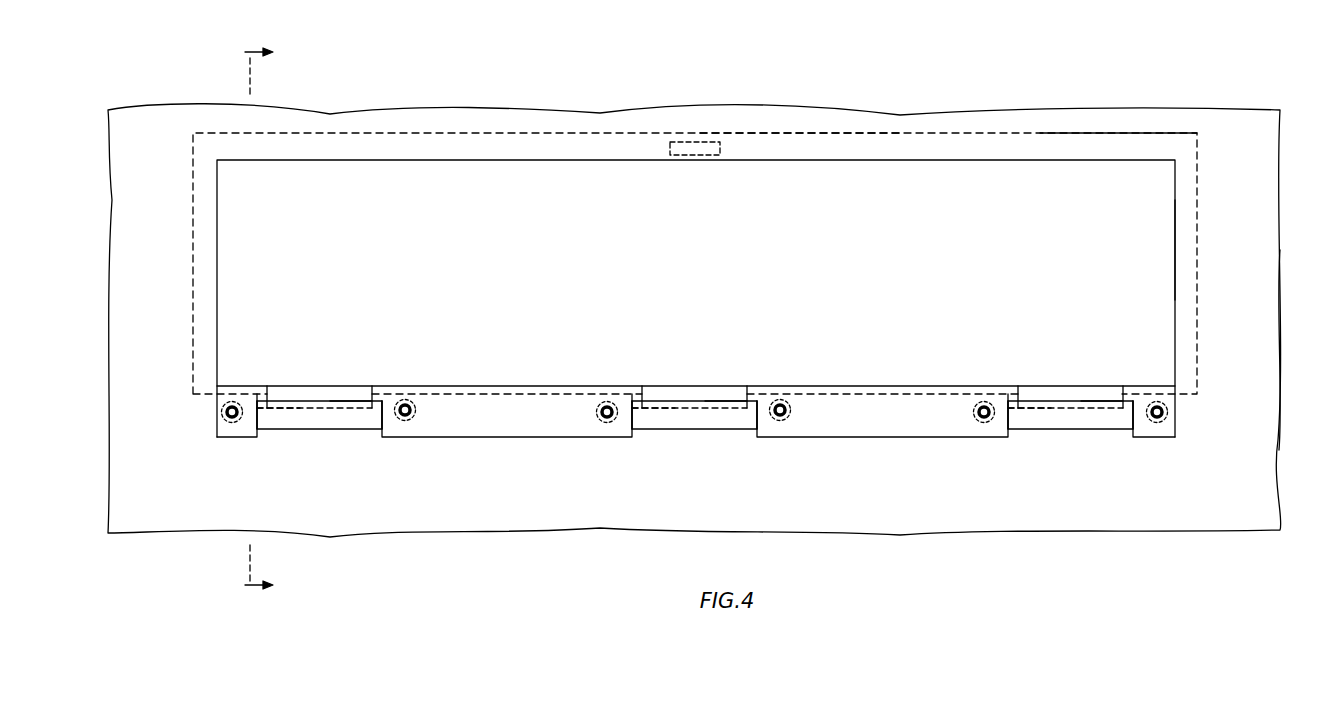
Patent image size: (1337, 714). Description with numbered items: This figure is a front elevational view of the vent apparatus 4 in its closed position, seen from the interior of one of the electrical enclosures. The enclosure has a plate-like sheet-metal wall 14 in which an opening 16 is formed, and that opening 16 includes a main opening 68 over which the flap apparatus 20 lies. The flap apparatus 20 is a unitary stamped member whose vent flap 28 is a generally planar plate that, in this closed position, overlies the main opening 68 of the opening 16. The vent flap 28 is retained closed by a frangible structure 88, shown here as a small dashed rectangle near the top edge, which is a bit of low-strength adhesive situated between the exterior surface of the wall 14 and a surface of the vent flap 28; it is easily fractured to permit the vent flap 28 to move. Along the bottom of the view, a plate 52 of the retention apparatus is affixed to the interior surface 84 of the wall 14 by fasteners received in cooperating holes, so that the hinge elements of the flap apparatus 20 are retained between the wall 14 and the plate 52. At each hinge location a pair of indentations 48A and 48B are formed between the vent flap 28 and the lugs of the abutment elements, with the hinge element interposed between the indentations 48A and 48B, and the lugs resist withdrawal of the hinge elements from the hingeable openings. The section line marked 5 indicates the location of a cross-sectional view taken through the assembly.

The vent apparatus 4 is at (1092, 134).
The section line 5- 5 is at (247, 325).
The wall 14 is at (1280, 140).
The opening 16 is at (1176, 170).
The flap apparatus 20 is at (762, 134).
The vent flap 28 is at (838, 133).
The indentation 48A is at (257, 395).
The indentation 48B is at (380, 412).
The plate 52 is at (894, 437).
The main opening 68 is at (1176, 236).
The interior surface 84 is at (1272, 275).
The frangible structure 88 is at (683, 148).